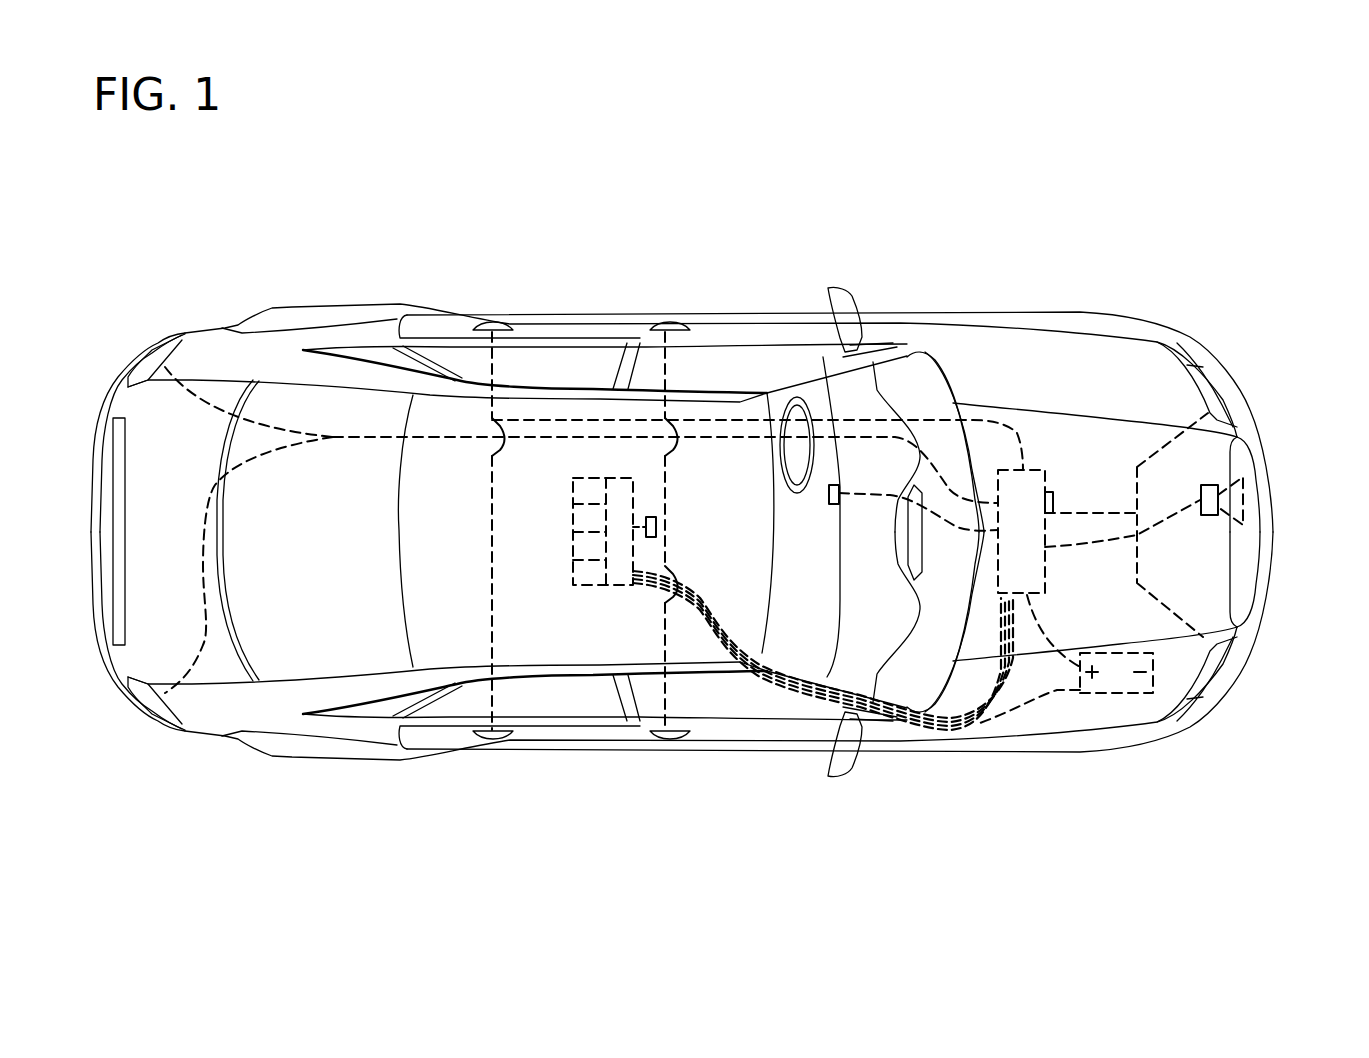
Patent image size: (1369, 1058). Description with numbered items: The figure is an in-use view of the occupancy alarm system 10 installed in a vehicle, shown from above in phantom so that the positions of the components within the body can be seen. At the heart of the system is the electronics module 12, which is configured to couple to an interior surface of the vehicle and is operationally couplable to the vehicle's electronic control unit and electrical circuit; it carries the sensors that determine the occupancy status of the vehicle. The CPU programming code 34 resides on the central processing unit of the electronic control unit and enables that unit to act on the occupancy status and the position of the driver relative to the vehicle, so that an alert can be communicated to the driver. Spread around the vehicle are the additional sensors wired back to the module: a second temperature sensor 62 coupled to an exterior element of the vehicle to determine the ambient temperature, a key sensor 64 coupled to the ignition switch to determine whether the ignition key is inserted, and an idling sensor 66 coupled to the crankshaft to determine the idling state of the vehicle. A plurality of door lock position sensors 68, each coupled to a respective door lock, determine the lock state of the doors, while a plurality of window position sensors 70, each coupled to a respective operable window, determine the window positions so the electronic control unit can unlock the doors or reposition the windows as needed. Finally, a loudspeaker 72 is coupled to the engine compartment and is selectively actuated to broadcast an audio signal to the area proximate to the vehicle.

The occupancy alarm system 10 is at (908, 184).
The electronics module 12 is at (573, 545).
The CPU programming code 34 is at (1019, 487).
The second temperature sensor 62 is at (652, 517).
The key sensor 64 is at (834, 485).
The idling sensor 66 is at (1052, 492).
The door lock position sensors 68 is at (650, 323).
The window position sensors 70 is at (660, 323).
The loudspeaker 72 is at (1227, 486).